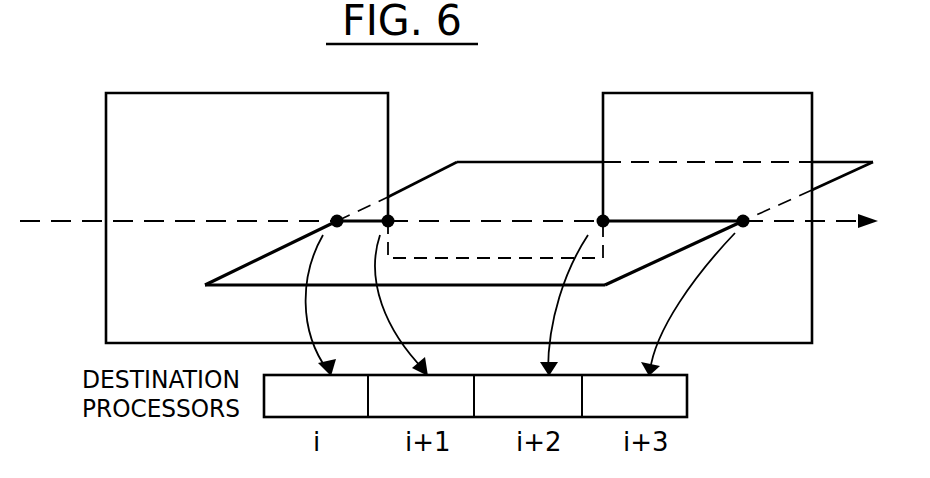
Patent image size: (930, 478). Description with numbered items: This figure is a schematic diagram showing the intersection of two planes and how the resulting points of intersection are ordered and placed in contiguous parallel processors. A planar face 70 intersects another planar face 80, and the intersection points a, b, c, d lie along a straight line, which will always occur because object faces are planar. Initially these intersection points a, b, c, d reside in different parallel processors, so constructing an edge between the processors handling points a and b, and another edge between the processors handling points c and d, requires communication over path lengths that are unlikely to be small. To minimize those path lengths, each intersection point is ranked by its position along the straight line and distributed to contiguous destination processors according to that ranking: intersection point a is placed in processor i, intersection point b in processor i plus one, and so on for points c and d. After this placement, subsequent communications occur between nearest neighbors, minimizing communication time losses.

The face 70 is at (125, 144).
The face 80 is at (473, 178).
The intersection point a is at (335, 238).
The intersection point b is at (399, 236).
The intersection point c is at (609, 236).
The intersection point d is at (750, 236).